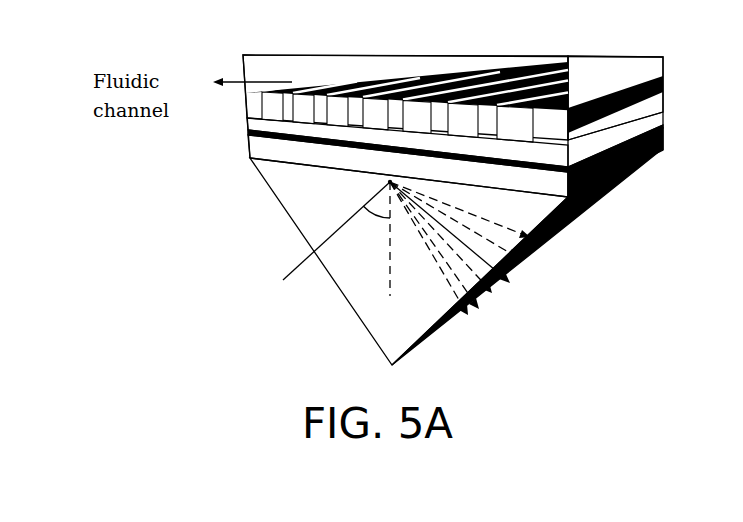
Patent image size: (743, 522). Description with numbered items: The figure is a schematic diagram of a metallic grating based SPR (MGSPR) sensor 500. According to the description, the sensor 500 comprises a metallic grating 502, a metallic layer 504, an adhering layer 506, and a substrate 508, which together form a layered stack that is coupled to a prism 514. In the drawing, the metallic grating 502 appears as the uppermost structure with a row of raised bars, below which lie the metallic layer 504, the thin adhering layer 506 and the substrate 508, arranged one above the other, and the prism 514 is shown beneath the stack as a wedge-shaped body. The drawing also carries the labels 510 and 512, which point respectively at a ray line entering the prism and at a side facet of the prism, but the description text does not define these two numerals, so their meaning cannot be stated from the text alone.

The metallic grating based SPR (MGSPR) sensor 500 is at (676, 47).
The metallic grating 502 is at (588, 122).
The metallic layer 504 is at (306, 125).
The adhering layer 506 is at (654, 132).
The substrate 508 is at (290, 152).
The incident light ray 510 is at (232, 310).
The prism output facet 512 is at (503, 266).
The prism 514 is at (357, 202).